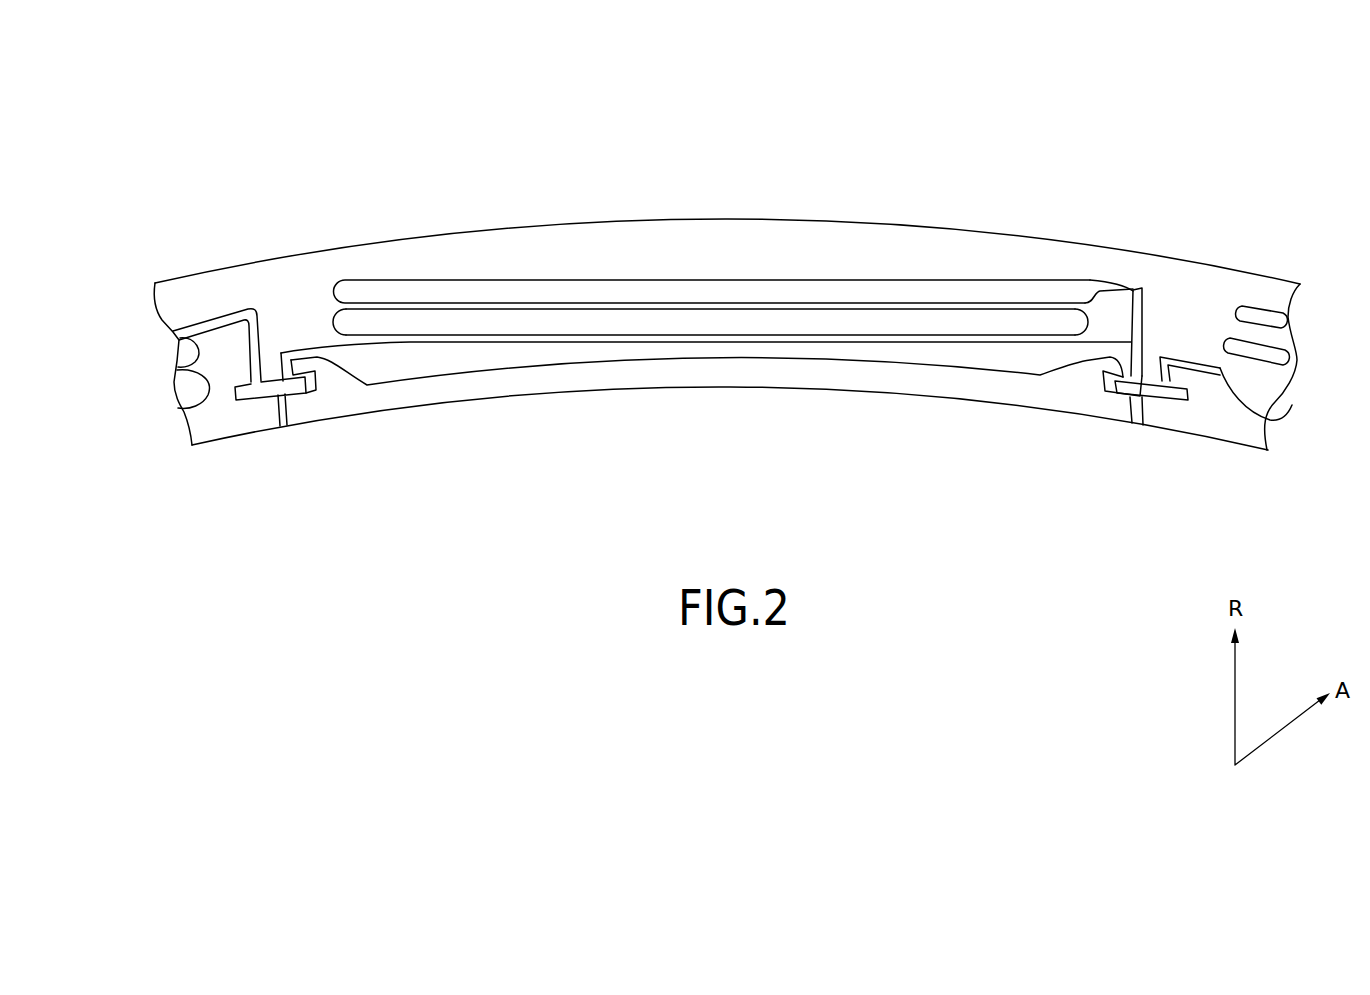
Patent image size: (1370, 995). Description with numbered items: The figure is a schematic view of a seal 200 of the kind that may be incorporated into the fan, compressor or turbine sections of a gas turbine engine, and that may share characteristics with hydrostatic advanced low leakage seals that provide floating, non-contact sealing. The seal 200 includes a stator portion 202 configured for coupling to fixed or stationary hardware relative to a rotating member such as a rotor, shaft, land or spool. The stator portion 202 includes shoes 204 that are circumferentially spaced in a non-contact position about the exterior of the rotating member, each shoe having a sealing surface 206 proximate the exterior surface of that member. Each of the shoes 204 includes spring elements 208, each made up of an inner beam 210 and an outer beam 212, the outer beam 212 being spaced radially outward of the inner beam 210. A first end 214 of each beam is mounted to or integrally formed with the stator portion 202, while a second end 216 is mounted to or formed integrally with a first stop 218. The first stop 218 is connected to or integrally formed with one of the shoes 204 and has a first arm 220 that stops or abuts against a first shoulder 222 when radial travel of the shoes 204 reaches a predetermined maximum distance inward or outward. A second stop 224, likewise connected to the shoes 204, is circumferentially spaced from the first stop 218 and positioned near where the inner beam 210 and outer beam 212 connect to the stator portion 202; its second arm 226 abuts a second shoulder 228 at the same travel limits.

The seal 200 is at (997, 135).
The stator portion 202 is at (1073, 260).
The shoes 204 is at (218, 430).
The sealing surface 206 is at (772, 412).
The spring elements 208 is at (586, 255).
The inner beam 210 is at (773, 343).
The outer beam 212 is at (873, 308).
The first end 214 is at (323, 311).
The second end 216 is at (1101, 299).
The first stop 218 is at (1123, 318).
The first arm 220 is at (1090, 368).
The first shoulder 222 is at (1128, 396).
The second stop 224 is at (353, 400).
The second arm 226 is at (303, 362).
The second shoulder 228 is at (296, 383).